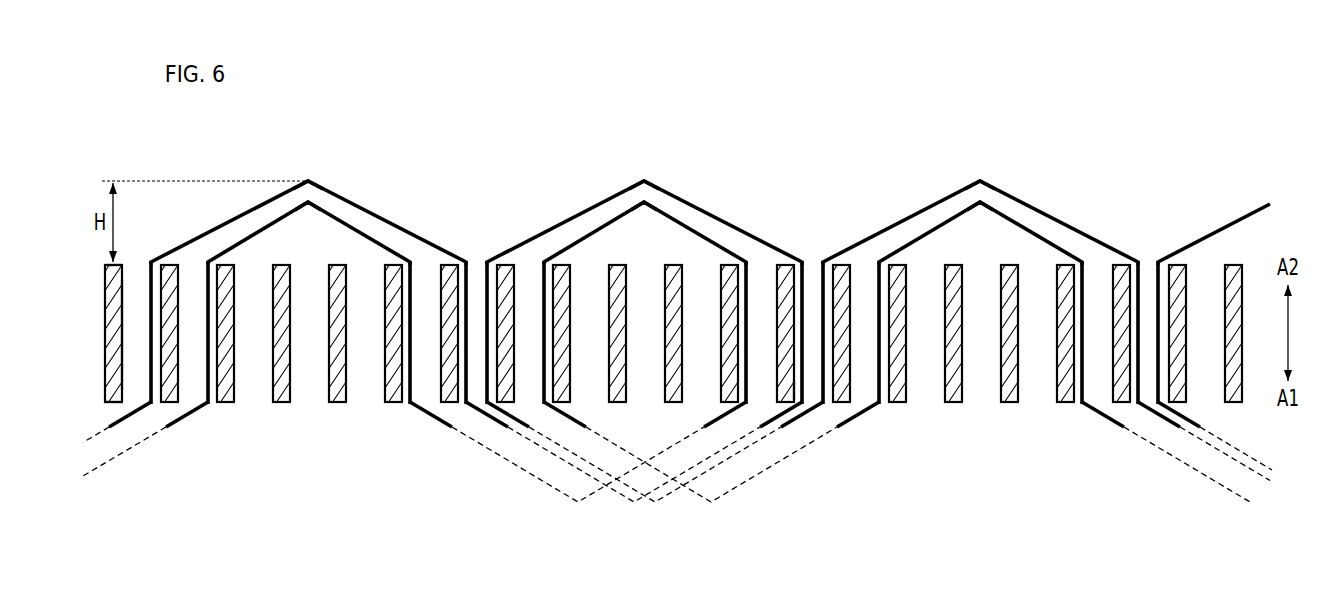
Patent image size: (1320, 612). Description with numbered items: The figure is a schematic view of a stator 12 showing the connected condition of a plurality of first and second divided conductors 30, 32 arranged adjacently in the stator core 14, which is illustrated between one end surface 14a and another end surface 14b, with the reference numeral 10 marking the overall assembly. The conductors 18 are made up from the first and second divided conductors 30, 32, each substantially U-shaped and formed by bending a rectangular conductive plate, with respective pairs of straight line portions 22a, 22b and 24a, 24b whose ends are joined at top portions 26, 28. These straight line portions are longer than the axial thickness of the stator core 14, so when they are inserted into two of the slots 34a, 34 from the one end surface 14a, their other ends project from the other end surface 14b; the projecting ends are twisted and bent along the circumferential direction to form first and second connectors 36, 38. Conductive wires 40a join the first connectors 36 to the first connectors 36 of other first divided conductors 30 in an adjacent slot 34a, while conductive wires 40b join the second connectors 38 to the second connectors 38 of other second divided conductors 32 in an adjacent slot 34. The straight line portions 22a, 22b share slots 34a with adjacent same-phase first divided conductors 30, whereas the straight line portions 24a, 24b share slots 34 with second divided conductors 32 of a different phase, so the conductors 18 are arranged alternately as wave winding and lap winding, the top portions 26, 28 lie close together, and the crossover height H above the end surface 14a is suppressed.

The rotating electric machine stator 10 is at (1144, 134).
The stator 12 is at (100, 197).
The stator core 14 is at (110, 329).
The one end surface 14a is at (113, 263).
The another end surface 14b is at (108, 402).
The conductor 18 is at (677, 344).
The straight line portion 22a is at (148, 282).
The straight line portion 22b is at (472, 277).
The straight line portion 24a is at (210, 347).
The straight line portion 24b is at (412, 347).
The top portion 26 is at (308, 177).
The top portion 28 is at (308, 206).
The first divided conductor 30 is at (347, 196).
The second divided conductor 32 is at (250, 232).
The slot 34 is at (193, 322).
The slot 34a is at (130, 297).
The first connector 36 is at (137, 415).
The second connector 38 is at (190, 418).
The conductive wire 40a is at (102, 433).
The conductive wire 40b is at (137, 450).